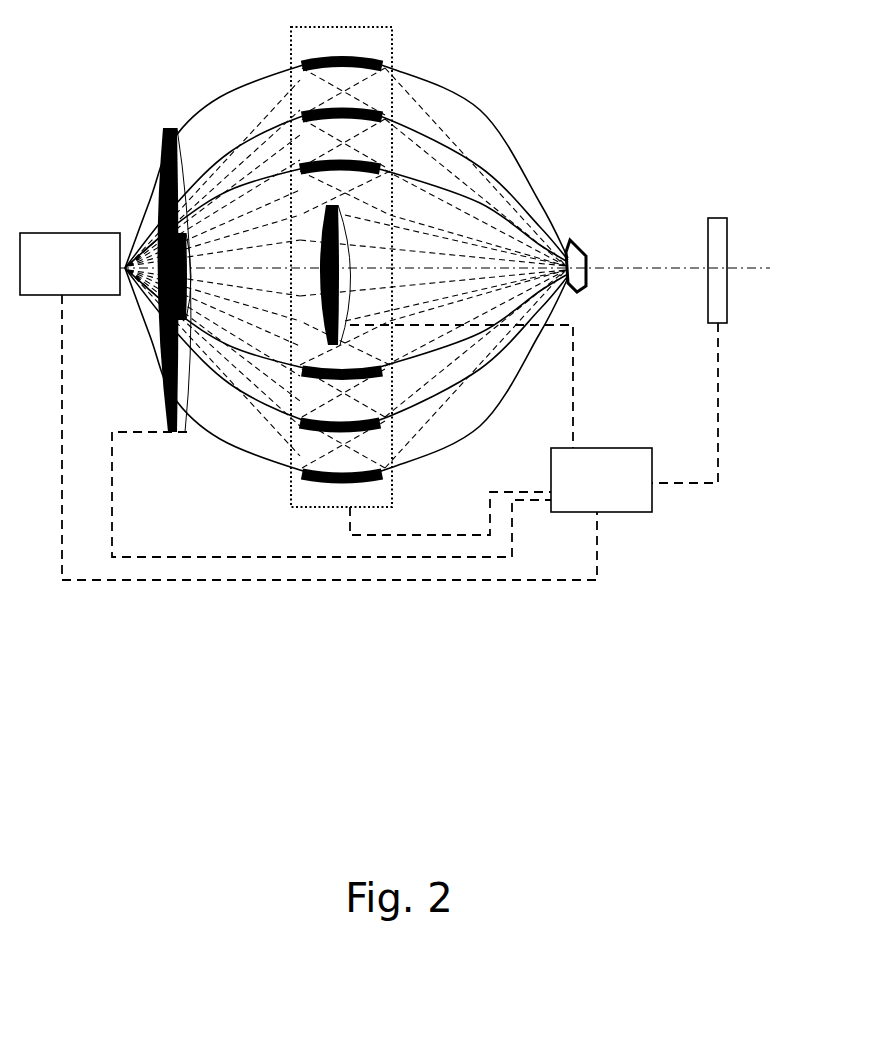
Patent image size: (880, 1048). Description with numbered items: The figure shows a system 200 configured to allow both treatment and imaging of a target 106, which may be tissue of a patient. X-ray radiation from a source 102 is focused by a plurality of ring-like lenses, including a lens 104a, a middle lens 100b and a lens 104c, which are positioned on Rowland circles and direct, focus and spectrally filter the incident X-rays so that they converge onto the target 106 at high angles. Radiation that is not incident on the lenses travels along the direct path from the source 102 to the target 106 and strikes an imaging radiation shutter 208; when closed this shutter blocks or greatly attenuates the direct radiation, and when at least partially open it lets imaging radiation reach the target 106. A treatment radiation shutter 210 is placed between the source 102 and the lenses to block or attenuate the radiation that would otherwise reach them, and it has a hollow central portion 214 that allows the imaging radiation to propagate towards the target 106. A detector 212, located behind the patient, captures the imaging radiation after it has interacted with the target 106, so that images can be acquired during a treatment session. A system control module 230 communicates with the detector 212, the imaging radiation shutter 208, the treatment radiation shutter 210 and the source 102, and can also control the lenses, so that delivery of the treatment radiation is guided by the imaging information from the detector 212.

The system 200 is at (595, 94).
The X-ray source 102 is at (70, 264).
The treatment radiation shutter 210 is at (155, 155).
The hollow central portion 214 is at (192, 257).
The imaging radiation shutter 208 is at (313, 289).
The ring-like lens 104a is at (298, 166).
The mirror segment 100b is at (310, 103).
The ring-like lens 104c is at (370, 53).
The target 106 is at (590, 252).
The detector 212 is at (735, 290).
The system control module 230 is at (601, 480).